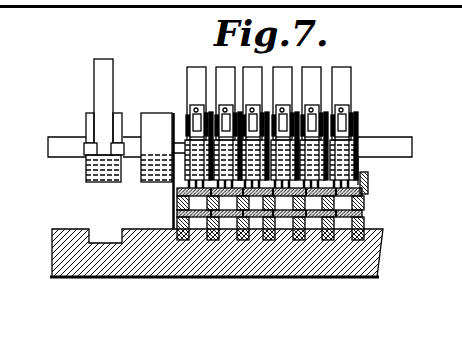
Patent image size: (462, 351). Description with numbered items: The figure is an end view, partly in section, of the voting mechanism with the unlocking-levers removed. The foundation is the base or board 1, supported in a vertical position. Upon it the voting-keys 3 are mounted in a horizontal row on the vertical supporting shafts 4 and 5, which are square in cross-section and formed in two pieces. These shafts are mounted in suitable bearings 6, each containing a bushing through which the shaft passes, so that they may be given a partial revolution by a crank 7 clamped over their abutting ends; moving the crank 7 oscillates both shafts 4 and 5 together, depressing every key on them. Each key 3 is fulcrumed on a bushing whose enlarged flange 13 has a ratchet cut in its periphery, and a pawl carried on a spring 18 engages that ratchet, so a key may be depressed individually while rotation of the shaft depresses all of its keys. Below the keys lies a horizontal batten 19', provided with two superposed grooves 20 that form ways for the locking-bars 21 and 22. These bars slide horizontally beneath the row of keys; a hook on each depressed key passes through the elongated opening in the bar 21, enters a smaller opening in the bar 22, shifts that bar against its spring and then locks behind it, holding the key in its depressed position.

The base 1 is at (383, 262).
The voting-key 3 is at (231, 69).
The supporting shaft 4 is at (54, 143).
The supporting shaft 5 is at (397, 143).
The bearing 6 is at (157, 171).
The crank 7 is at (103, 87).
The flange 13 is at (377, 124).
The spring 18 is at (340, 111).
The batten 19' is at (381, 179).
The groove 20 is at (363, 193).
The locking-bar 21 is at (172, 201).
The locking-bar 22 is at (160, 216).